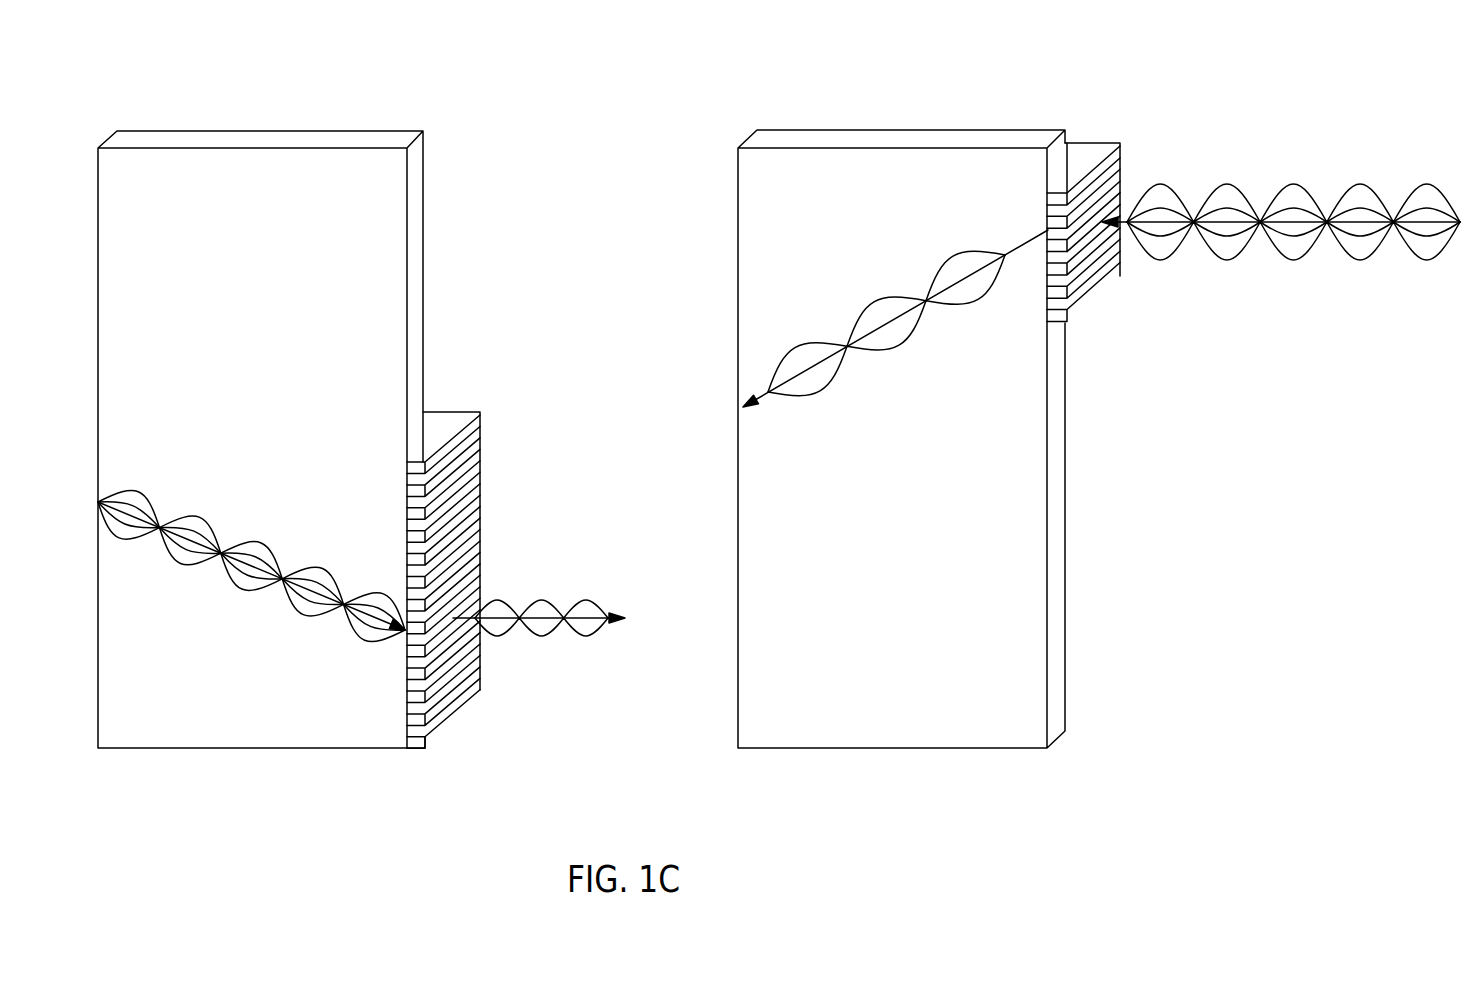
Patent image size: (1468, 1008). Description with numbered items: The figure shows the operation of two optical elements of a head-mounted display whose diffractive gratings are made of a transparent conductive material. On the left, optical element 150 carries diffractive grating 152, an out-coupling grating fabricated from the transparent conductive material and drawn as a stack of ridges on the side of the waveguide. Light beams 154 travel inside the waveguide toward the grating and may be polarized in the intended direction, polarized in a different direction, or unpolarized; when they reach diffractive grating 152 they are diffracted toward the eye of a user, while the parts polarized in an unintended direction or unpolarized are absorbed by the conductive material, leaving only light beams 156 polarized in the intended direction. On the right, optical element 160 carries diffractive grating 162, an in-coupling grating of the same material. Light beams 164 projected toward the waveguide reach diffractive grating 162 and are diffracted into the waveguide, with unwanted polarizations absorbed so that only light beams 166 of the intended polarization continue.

The optical element 150 is at (163, 94).
The diffractive grating 152 is at (457, 547).
The light beams 154 is at (207, 512).
The light beams 156 is at (546, 602).
The optical element 160 is at (845, 110).
The diffractive grating 162 is at (1103, 161).
The light beams 164 is at (1355, 258).
The light beams 166 is at (893, 358).